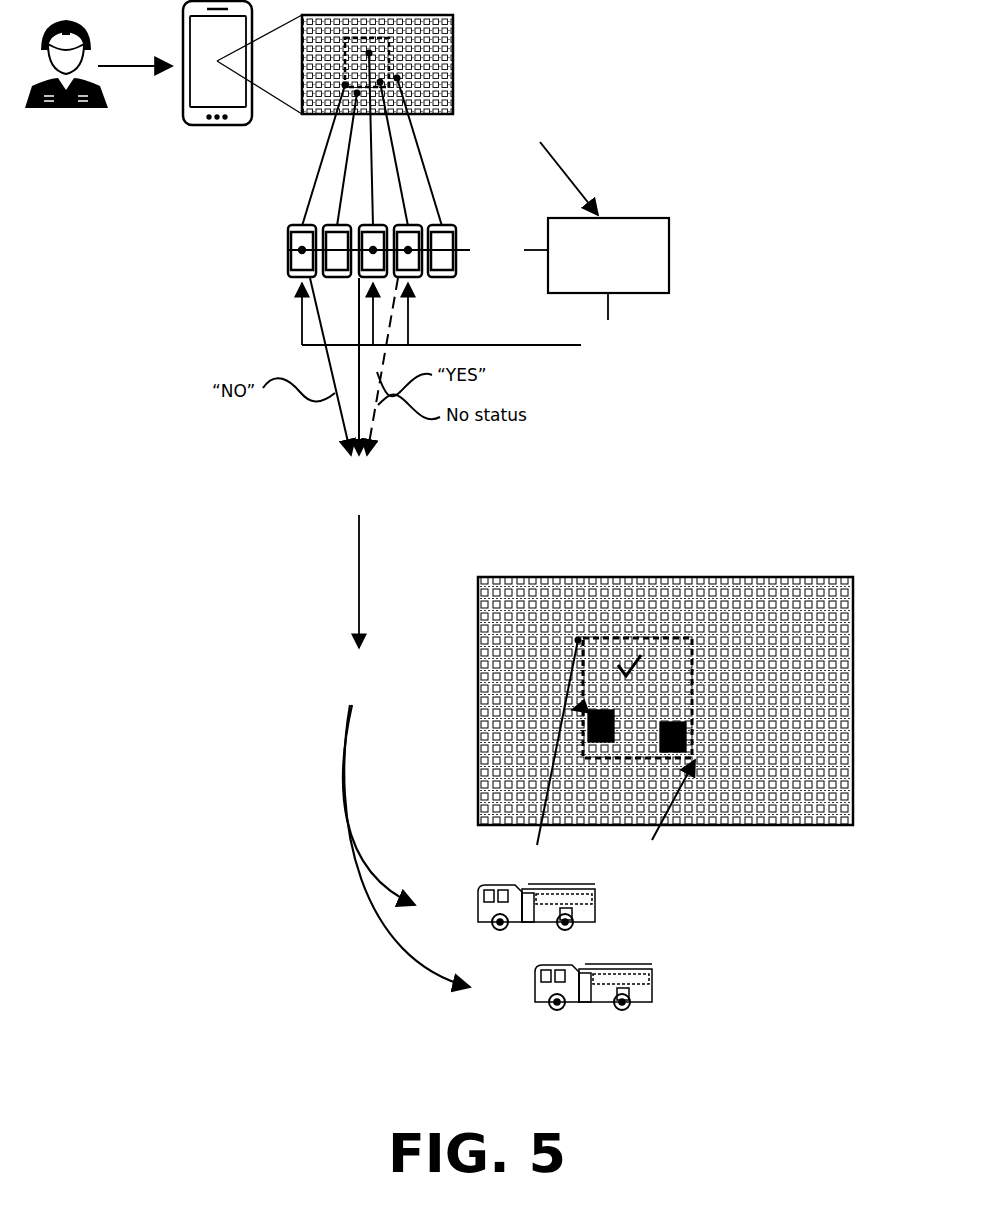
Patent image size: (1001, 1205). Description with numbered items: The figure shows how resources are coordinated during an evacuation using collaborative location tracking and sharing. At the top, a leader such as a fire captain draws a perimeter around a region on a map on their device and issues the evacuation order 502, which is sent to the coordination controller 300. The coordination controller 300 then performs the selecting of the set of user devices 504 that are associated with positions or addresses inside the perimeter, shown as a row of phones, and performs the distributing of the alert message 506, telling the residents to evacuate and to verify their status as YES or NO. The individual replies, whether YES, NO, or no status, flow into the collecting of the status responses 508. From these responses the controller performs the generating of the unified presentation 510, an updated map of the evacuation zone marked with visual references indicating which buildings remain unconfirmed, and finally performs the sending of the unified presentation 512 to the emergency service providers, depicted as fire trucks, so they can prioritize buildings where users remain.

The coordination controller 300 is at (608, 255).
The issuing the evacuation order 502 is at (453, 60).
The selecting the set of user devices 504 is at (406, 250).
The distributing the alert message 506 is at (697, 360).
The collecting the status responses 508 is at (359, 488).
The generating the unified presentation 510 is at (478, 690).
The sending the unified presentation 512 is at (536, 946).